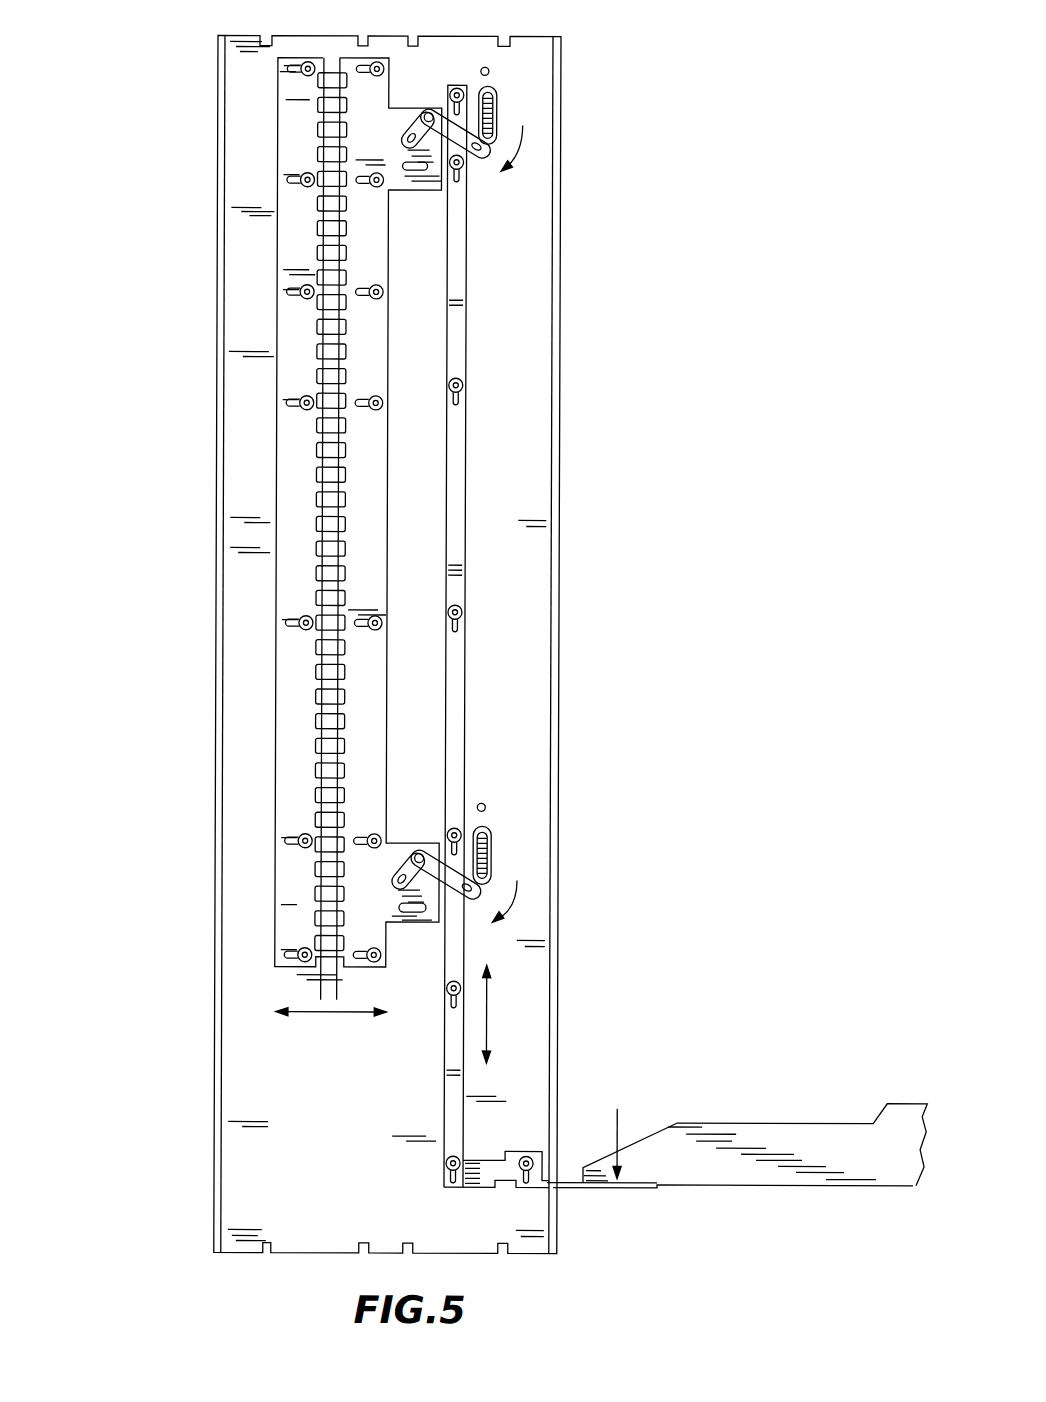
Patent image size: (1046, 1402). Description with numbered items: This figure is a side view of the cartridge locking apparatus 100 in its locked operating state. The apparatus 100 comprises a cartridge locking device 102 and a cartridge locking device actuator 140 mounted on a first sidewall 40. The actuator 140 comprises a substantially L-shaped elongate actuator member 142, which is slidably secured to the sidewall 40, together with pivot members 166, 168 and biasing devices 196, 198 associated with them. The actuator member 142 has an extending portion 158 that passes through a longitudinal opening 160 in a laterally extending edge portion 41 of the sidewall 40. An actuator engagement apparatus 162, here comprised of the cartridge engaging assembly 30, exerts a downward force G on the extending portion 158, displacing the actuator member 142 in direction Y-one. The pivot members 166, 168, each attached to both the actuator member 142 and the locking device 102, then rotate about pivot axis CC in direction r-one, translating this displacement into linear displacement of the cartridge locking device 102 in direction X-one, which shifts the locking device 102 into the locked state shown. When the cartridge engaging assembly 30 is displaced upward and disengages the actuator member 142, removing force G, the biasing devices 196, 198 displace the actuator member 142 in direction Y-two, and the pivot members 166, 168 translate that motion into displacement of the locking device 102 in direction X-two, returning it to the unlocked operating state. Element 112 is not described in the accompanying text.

The cartridge locking apparatus 100 is at (183, 169).
The first sidewall 40 is at (240, 337).
The laterally extending edge portion 41 is at (562, 930).
The cartridge locking device 102 is at (288, 450).
The drive chain 112 is at (288, 228).
The cartridge locking device actuator 140 is at (480, 492).
The elongate actuator member 142 is at (464, 563).
The pivot member 166 is at (428, 113).
The pivot member 168 is at (421, 853).
The biasing device 196 is at (494, 113).
The biasing device 198 is at (486, 848).
The extending portion 158 is at (629, 1188).
The longitudinal opening 160 is at (564, 1190).
The cartridge engaging assembly 30 is at (771, 1132).
The actuator engagement apparatus 162 is at (755, 1144).
The pivot axis CC is at (432, 113).
The force G is at (617, 1129).